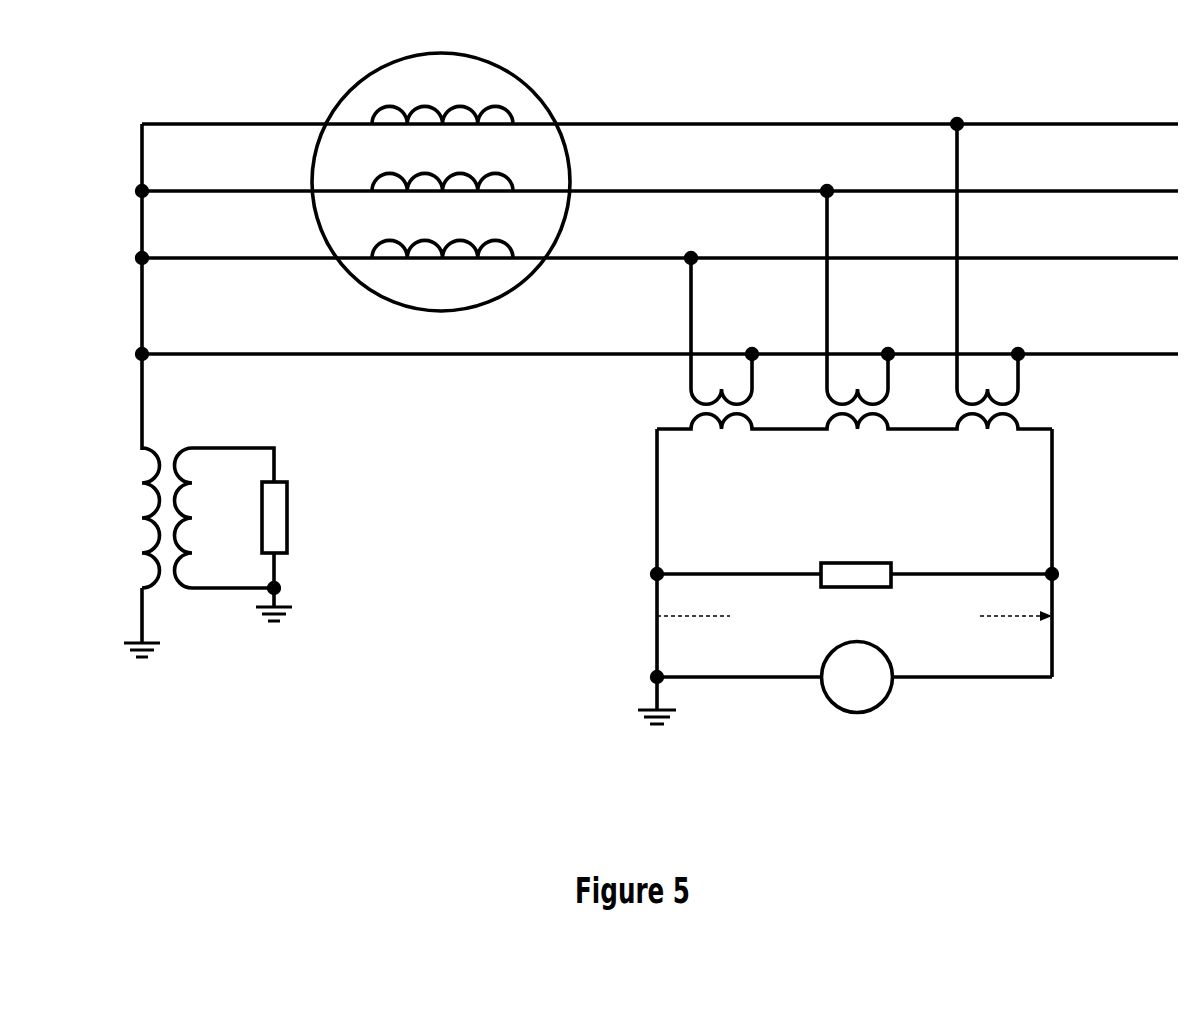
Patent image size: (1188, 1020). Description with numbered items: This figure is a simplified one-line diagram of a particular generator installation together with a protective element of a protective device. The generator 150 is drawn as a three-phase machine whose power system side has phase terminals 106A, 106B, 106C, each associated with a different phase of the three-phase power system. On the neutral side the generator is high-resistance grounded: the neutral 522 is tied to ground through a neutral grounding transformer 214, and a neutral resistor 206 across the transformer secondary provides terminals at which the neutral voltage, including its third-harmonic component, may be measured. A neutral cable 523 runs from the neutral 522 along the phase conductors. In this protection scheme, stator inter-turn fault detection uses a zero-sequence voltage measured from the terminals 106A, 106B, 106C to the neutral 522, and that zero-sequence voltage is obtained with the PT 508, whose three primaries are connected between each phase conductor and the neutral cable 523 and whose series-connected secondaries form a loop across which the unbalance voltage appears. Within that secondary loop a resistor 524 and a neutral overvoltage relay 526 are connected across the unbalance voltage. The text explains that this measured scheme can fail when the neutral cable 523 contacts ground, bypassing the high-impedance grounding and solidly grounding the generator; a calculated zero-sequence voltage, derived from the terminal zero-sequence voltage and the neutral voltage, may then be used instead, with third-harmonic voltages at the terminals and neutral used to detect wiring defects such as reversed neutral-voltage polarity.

The generator 150 is at (428, 53).
The phase terminal 106A is at (1104, 127).
The phase terminal 106B is at (1112, 195).
The phase terminal 106C is at (1110, 262).
The neutral 522 is at (148, 348).
The neutral cable 523 is at (498, 357).
The neutral grounding transformer 214 is at (167, 452).
The neutral resistor 206 is at (288, 518).
The PT 508 is at (1172, 404).
The resistor 524 is at (862, 563).
The neutral overvoltage relay 59N 526 is at (843, 712).